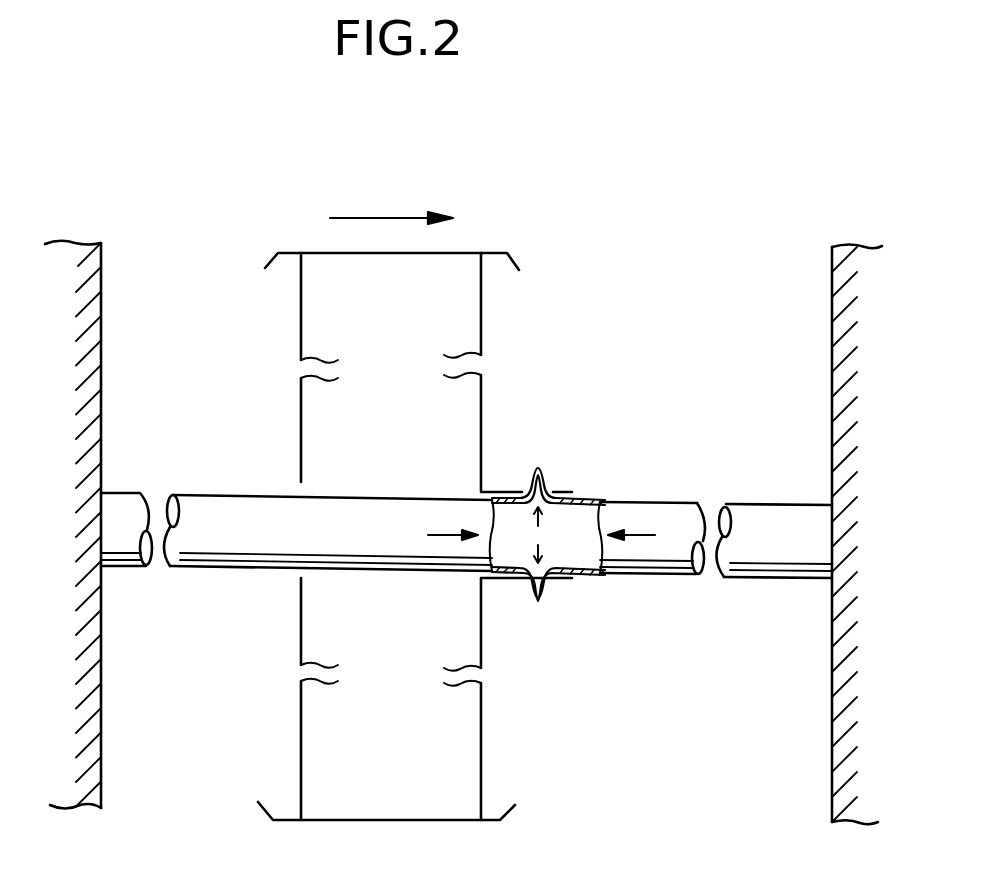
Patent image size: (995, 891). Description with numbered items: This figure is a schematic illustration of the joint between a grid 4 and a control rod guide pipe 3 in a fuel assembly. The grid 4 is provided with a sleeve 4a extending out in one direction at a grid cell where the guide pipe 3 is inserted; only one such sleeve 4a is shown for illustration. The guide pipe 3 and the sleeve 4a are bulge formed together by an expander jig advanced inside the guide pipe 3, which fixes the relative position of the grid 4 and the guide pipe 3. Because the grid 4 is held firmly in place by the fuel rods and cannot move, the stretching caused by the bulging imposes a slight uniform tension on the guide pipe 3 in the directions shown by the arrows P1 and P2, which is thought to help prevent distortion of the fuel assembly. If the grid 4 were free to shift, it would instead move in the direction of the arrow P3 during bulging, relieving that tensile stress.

The guide pipe 3 is at (225, 510).
The grid 4 is at (462, 253).
The sleeve 4a is at (548, 465).
The arrow P1 is at (430, 533).
The arrow P2 is at (643, 533).
The arrow P3 is at (383, 216).